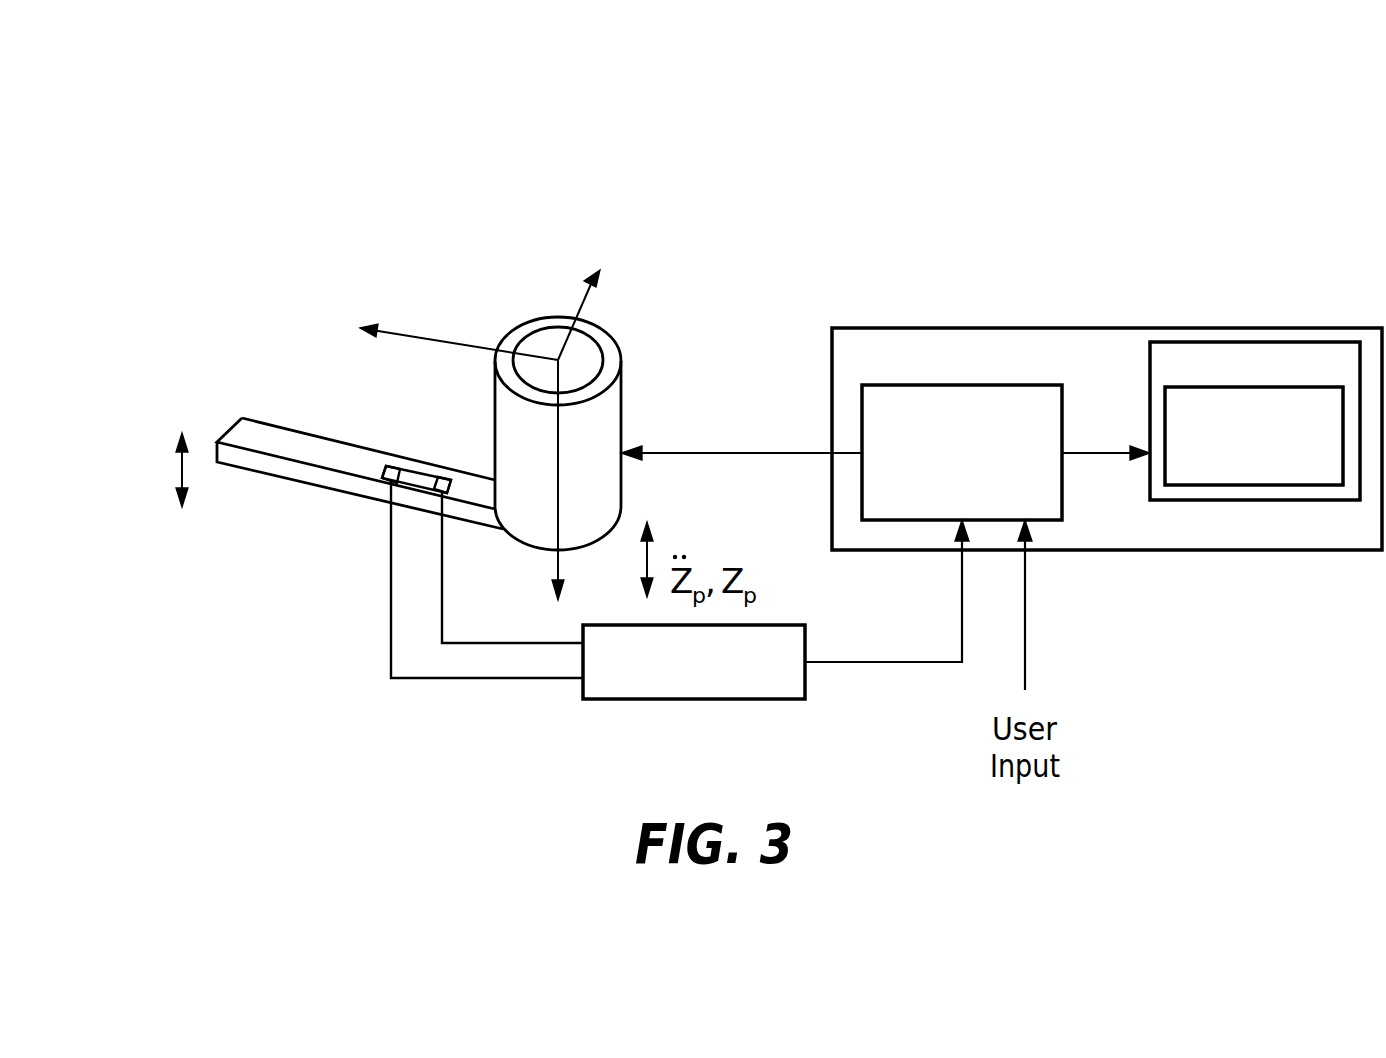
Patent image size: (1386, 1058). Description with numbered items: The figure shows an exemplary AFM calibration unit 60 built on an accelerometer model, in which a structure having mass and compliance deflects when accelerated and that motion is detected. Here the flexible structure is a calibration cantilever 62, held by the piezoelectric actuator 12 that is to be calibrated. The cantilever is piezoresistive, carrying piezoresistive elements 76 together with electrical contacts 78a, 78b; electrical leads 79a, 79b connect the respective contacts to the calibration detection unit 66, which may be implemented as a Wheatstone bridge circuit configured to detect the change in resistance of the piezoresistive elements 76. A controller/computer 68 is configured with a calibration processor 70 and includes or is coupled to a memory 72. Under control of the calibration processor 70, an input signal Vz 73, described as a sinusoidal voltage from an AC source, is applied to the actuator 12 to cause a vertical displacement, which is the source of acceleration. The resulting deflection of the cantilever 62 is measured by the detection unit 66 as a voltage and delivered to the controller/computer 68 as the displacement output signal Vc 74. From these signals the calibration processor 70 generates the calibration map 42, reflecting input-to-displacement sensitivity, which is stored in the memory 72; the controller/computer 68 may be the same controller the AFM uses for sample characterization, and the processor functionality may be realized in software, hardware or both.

The AFM calibration unit 60 is at (699, 124).
The piezoelectric actuator 12 is at (550, 317).
The calibration cantilever 62 is at (265, 437).
The piezoresistive elements 76 is at (417, 477).
The electrical contact 78a is at (397, 465).
The electrical contact 78b is at (443, 477).
The electrical lead 79a is at (391, 598).
The electrical lead 79b is at (443, 552).
The calibration detection unit 66 is at (645, 699).
The displacement output signal Vc 74 is at (921, 662).
The input signal Vz 73 is at (674, 453).
The controller/computer 68 is at (910, 328).
The calibration processor 70 is at (862, 478).
The memory 72 is at (1280, 502).
The calibration map 42 is at (1197, 472).